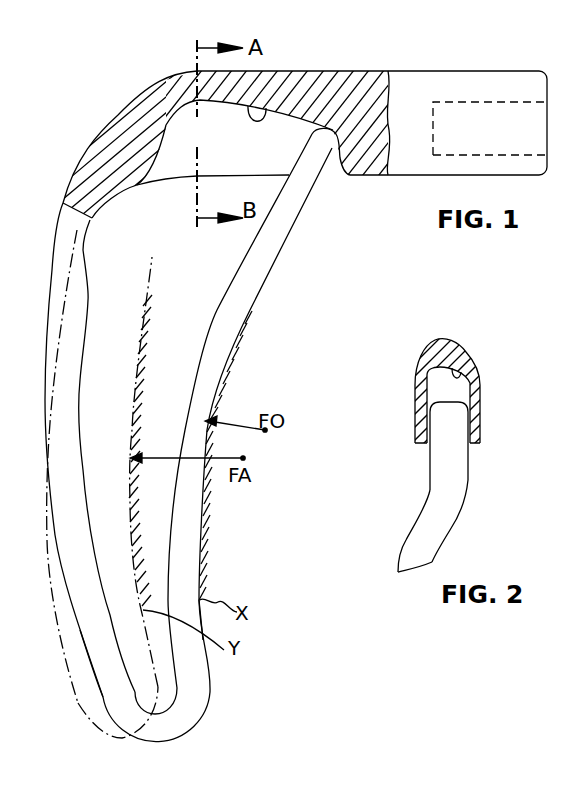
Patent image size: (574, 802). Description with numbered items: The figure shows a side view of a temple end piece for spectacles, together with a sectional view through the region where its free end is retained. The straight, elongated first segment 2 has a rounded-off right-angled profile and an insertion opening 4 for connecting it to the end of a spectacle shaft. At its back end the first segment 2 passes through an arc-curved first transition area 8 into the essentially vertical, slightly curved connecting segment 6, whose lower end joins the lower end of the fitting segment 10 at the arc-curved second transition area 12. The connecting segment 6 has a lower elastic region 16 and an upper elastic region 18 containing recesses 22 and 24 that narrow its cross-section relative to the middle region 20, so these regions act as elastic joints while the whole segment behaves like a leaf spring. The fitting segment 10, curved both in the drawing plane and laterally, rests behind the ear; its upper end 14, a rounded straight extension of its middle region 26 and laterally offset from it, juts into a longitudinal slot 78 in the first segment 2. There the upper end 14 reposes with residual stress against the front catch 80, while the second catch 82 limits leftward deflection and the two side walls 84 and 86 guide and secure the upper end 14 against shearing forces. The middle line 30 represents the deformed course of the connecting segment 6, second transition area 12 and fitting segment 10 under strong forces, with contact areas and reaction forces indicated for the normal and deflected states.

In FIG. 1, the first segment 2 is at (415, 80).
In FIG. 1, the insertion opening 4 is at (453, 102).
In FIG. 1, the connecting segment 6 is at (40, 320).
In FIG. 1, the first transition area 8 is at (110, 135).
In FIG. 1, the fitting segment 10 is at (210, 513).
In FIG. 2, the fitting segment 10 is at (470, 524).
In FIG. 1, the second transition area 12 is at (157, 736).
In FIG. 1, the upper end 14 is at (322, 226).
In FIG. 2, the upper end 14 is at (482, 467).
In FIG. 1, the lower elastic region 16 is at (114, 698).
In FIG. 1, the upper elastic region 18 is at (66, 251).
In FIG. 1, the middle region 20 is at (66, 377).
In FIG. 1, the recess 22 is at (82, 632).
In FIG. 1, the recess 24 is at (85, 254).
In FIG. 1, the middle region 26 is at (185, 566).
In FIG. 2, the middle region 26 is at (413, 557).
In FIG. 1, the middle line 30 is at (48, 552).
In FIG. 1, the longitudinal slot 78 is at (268, 103).
In FIG. 2, the longitudinal slot 78 is at (455, 369).
In FIG. 1, the catch 80 is at (275, 141).
In FIG. 1, the second catch 82 is at (161, 128).
In FIG. 2, the side wall 84 is at (477, 406).
In FIG. 1, the side wall 86 is at (175, 163).
In FIG. 2, the side wall 86 is at (422, 403).